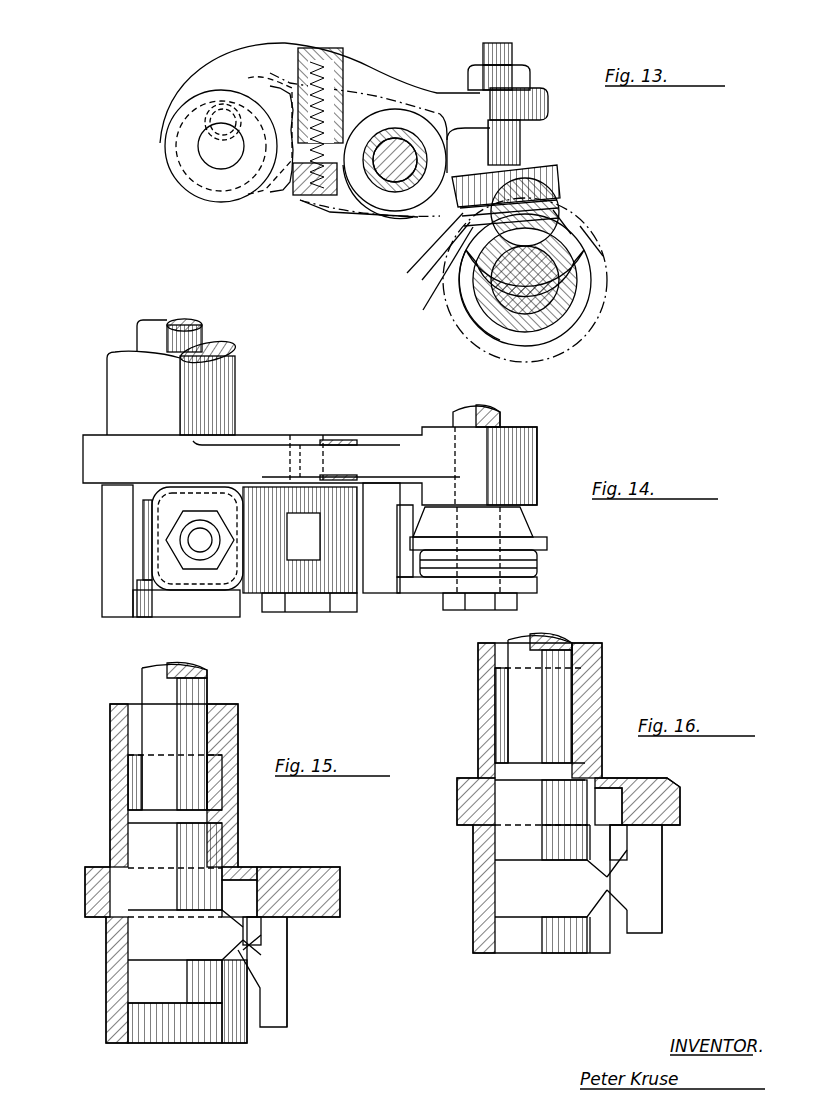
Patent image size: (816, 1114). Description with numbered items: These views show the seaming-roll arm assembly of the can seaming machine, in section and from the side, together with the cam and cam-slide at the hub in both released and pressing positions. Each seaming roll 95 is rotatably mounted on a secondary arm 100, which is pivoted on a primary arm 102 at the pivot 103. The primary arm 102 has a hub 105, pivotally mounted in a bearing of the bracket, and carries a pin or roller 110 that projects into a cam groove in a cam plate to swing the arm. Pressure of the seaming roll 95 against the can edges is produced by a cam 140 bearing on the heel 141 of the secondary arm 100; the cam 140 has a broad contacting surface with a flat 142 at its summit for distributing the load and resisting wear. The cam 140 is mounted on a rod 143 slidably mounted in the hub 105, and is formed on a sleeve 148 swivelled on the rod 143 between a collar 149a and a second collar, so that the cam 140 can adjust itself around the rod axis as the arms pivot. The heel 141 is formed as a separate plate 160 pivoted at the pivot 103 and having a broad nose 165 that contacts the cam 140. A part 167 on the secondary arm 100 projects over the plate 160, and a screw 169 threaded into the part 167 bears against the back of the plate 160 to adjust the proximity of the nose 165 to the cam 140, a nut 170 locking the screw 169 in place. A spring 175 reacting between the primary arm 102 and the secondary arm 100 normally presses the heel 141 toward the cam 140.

In FIG. 13, the seaming roll 95 is at (235, 85).
In FIG. 14, the seaming roll 95 is at (533, 530).
In FIG. 13, the secondary arm 100 is at (383, 78).
In FIG. 14, the secondary arm 100 is at (375, 587).
In FIG. 13, the primary arm 102 is at (262, 90).
In FIG. 14, the primary arm 102 is at (375, 458).
In FIG. 15, the primary arm 102 is at (335, 872).
In FIG. 16, the primary arm 102 is at (686, 806).
In FIG. 13, the pivot 103 is at (378, 176).
In FIG. 14, the pivot 103 is at (292, 440).
In FIG. 13, the hub 105 is at (575, 330).
In FIG. 14, the hub 105 is at (107, 391).
In FIG. 15, the hub 105 is at (110, 812).
In FIG. 16, the hub 105 is at (480, 939).
In FIG. 13, the pin or roller 110 is at (210, 197).
In FIG. 13, the cam 140 is at (560, 212).
In FIG. 15, the cam 140 is at (243, 940).
In FIG. 16, the cam 140 is at (600, 882).
In FIG. 13, the heel 141 is at (426, 263).
In FIG. 14, the heel 141 is at (145, 560).
In FIG. 15, the heel 141 is at (275, 1022).
In FIG. 16, the heel 141 is at (640, 938).
In FIG. 15, the flat 142 is at (248, 950).
In FIG. 16, the flat 142 is at (612, 890).
In FIG. 13, the rod 143 is at (550, 288).
In FIG. 14, the rod 143 is at (145, 325).
In FIG. 15, the rod 143 is at (150, 686).
In FIG. 16, the rod 143 is at (560, 650).
In FIG. 13, the sleeve 148 is at (568, 255).
In FIG. 15, the sleeve 148 is at (150, 851).
In FIG. 16, the sleeve 148 is at (520, 804).
In FIG. 15, the collar 149a is at (165, 815).
In FIG. 16, the collar 149a is at (520, 768).
In FIG. 13, the plate 160 is at (560, 178).
In FIG. 14, the plate 160 is at (150, 535).
In FIG. 13, the nose 165 is at (440, 295).
In FIG. 13, the part 167 is at (548, 100).
In FIG. 13, the screw 169 is at (505, 44).
In FIG. 14, the screw 169 is at (202, 548).
In FIG. 13, the nut 170 is at (520, 66).
In FIG. 14, the nut 170 is at (140, 585).
In FIG. 13, the spring 175 is at (320, 74).